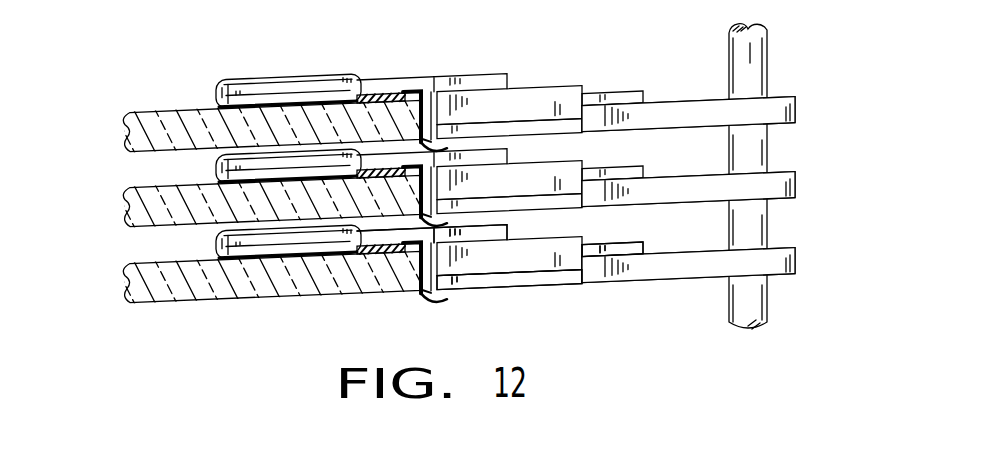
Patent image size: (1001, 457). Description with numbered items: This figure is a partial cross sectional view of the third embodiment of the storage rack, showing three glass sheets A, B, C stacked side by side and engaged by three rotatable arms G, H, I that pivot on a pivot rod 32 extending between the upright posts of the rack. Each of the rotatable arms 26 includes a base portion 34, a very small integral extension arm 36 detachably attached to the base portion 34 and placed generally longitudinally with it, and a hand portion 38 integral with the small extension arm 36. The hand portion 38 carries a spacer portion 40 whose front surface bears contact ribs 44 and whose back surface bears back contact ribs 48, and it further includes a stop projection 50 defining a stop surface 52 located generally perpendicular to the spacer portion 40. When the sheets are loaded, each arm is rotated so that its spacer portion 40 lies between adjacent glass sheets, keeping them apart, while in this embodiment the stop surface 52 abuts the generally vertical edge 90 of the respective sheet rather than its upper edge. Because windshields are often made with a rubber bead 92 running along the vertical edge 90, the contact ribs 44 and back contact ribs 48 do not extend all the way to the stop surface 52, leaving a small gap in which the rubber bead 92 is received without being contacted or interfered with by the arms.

The rotatable arm 26 is at (587, 289).
The pivot rod 32 is at (768, 307).
The base portion 34 is at (797, 180).
The extension arm 36 is at (520, 110).
The hand portion 38 is at (393, 80).
The spacer portion 40 is at (216, 92).
The contact ribs 44 is at (243, 98).
The back contact ribs 48 is at (268, 80).
The stop projection 50 is at (430, 98).
The stop surface 52 is at (413, 90).
The vertical edge 90 is at (430, 150).
The rubber bead 92 is at (377, 98).
The glass sheet A is at (128, 288).
The glass sheet B is at (127, 215).
The glass sheet C is at (127, 135).
The arm G is at (801, 251).
The arm H is at (800, 188).
The arm I is at (690, 100).